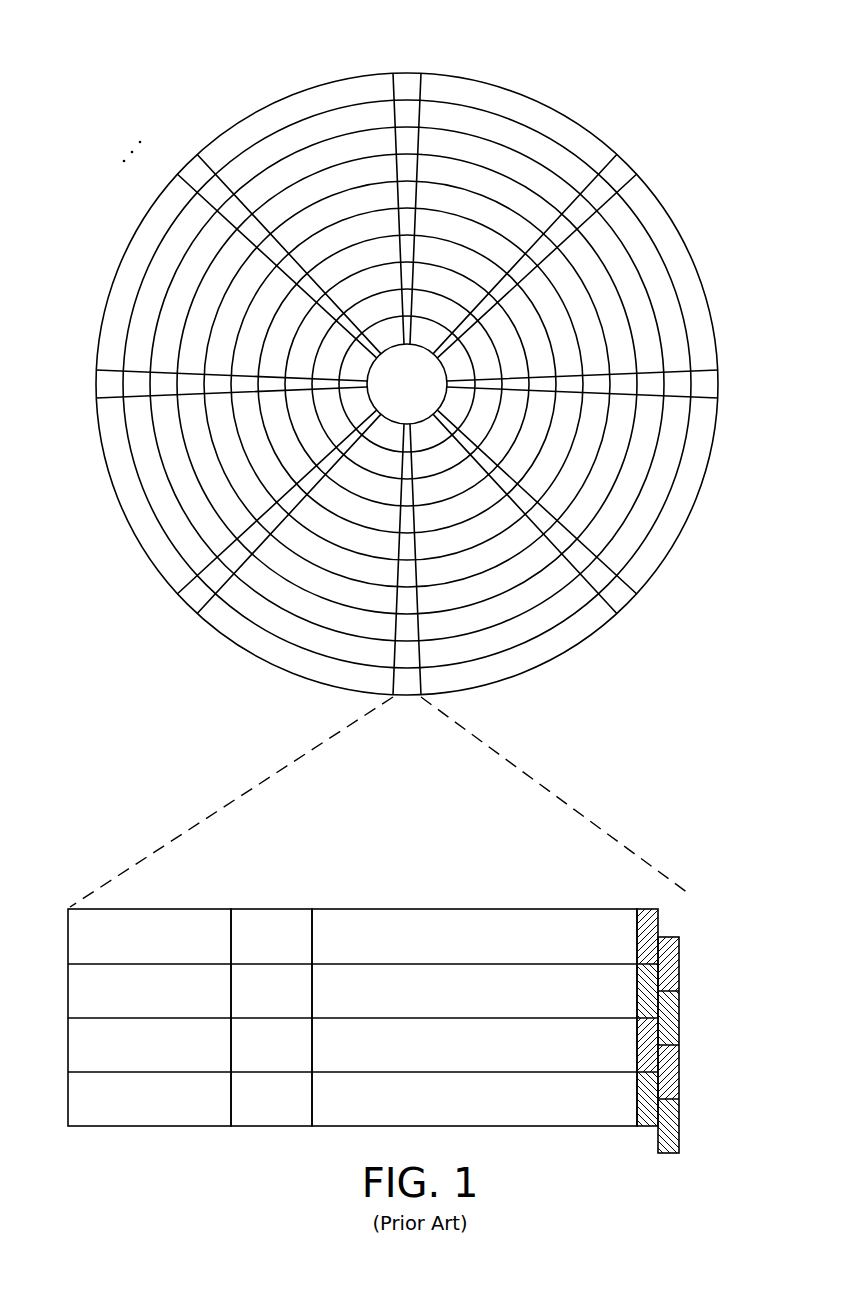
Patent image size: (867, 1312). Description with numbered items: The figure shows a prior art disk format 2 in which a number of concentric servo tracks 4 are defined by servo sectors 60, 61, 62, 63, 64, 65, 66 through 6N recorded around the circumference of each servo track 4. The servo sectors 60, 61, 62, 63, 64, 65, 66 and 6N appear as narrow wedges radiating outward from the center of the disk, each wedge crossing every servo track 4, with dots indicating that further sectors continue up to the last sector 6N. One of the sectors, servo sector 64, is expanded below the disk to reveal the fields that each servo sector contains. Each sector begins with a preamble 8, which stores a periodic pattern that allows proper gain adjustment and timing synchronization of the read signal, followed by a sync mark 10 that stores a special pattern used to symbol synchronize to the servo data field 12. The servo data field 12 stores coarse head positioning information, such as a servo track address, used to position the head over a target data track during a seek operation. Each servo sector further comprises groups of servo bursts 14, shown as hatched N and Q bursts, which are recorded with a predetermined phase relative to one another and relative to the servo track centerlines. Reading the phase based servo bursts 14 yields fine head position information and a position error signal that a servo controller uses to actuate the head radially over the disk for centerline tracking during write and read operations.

The disk format 2 is at (172, 74).
The servo track 4 is at (512, 137).
The servo sector 60 is at (408, 82).
The servo sector 61 is at (618, 170).
The servo sector 62 is at (710, 384).
The servo sector 63 is at (620, 597).
The servo sector 64 is at (266, 763).
The servo sector 65 is at (191, 598).
The servo sector 66 is at (102, 381).
The servo sector 6N is at (193, 168).
The preamble 8 is at (157, 909).
The sync mark 10 is at (275, 909).
The servo data field 12 is at (462, 909).
The servo bursts 14 is at (681, 902).